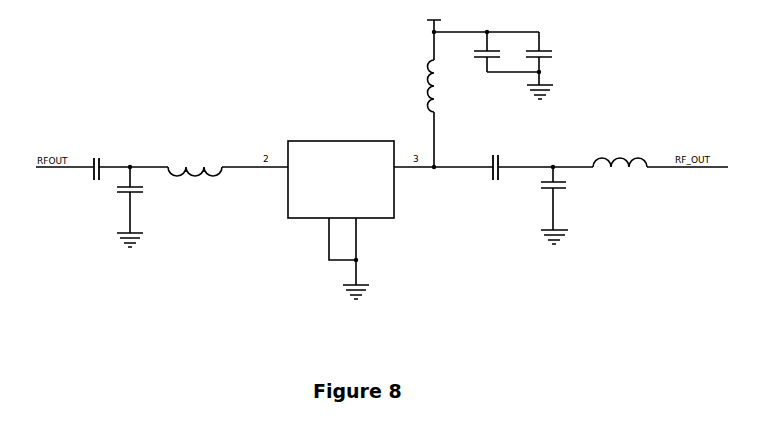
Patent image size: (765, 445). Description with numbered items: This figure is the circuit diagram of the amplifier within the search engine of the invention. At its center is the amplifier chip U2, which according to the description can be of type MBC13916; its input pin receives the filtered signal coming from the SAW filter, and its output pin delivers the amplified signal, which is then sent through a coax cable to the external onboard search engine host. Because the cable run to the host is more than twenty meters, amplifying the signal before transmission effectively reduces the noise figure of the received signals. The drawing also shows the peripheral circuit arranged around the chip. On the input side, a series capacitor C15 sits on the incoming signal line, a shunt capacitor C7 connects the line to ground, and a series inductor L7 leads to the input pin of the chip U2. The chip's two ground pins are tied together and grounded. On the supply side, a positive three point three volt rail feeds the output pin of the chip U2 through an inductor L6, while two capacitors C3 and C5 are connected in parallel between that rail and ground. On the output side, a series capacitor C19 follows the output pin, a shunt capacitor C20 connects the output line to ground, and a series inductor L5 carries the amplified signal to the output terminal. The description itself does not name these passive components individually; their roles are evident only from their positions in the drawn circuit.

The input DC-blocking capacitor C15 is at (95, 162).
The input shunt capacitor C7 is at (137, 207).
The input series inductor L7 is at (195, 164).
The chip of the amplifier U2 is at (341, 209).
The supply choke inductor L6 is at (433, 87).
The supply decoupling capacitor C3 is at (493, 52).
The supply decoupling capacitor C5 is at (546, 52).
The output DC-blocking capacitor C19 is at (496, 161).
The output shunt capacitor C20 is at (563, 205).
The output series inductor L5 is at (620, 158).